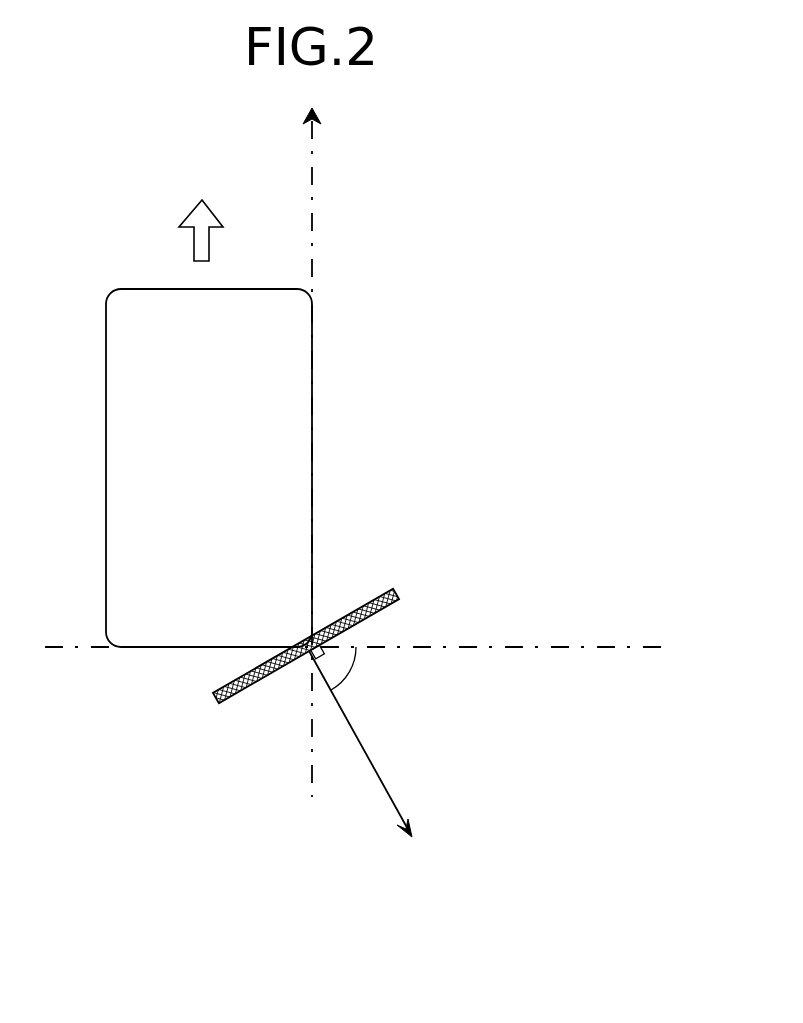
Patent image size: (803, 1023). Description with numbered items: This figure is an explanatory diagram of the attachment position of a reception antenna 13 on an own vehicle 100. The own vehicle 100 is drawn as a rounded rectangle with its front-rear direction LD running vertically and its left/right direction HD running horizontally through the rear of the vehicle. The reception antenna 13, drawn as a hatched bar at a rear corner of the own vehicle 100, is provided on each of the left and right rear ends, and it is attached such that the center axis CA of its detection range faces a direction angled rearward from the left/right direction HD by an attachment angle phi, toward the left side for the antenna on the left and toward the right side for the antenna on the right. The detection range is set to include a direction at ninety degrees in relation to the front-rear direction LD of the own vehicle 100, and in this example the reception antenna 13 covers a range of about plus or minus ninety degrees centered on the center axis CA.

The own vehicle 100 is at (106, 367).
The reception antenna 13 is at (396, 593).
The front-rear direction LD is at (313, 215).
The left/right direction HD is at (593, 647).
The center axis CA is at (400, 818).